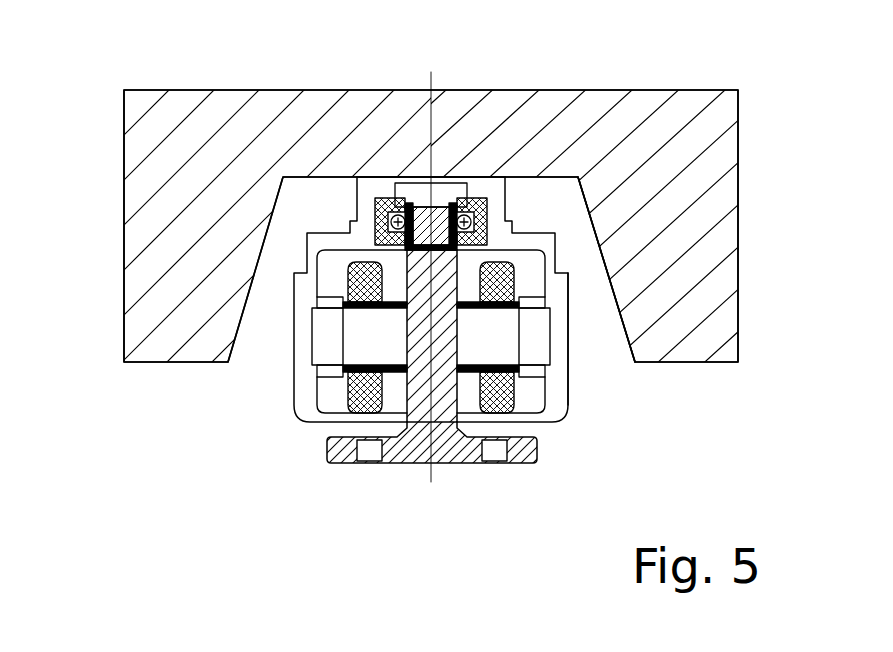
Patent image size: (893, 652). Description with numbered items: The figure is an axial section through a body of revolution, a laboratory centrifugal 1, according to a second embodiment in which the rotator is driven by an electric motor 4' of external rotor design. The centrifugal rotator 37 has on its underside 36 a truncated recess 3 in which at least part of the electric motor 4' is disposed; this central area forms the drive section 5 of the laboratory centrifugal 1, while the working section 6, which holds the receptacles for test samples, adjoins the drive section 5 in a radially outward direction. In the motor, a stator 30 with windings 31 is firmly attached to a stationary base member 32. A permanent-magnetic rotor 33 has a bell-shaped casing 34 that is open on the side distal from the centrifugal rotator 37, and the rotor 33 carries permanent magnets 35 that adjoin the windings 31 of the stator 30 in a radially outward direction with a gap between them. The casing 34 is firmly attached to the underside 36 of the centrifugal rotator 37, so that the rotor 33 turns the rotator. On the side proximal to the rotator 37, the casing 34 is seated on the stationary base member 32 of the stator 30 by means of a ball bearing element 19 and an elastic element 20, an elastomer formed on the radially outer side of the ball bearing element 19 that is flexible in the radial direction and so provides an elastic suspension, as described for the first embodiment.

The laboratory centrifugal 1 is at (803, 418).
The truncated recess 3 is at (240, 325).
The electric motor 4' is at (374, 417).
The drive section 5 is at (533, 67).
The working section 6 is at (88, 130).
The ball bearing element 19 is at (457, 205).
The elastic element 20 is at (375, 205).
The stator 30 is at (503, 357).
The windings 31 is at (513, 402).
The base member 32 is at (450, 464).
The permanent-magnetic rotor 33 is at (320, 343).
The bell-shaped casing 34 is at (573, 356).
The permanent magnets 35 is at (379, 367).
The underside 36 is at (562, 174).
The centrifugal rotator 37 is at (738, 228).